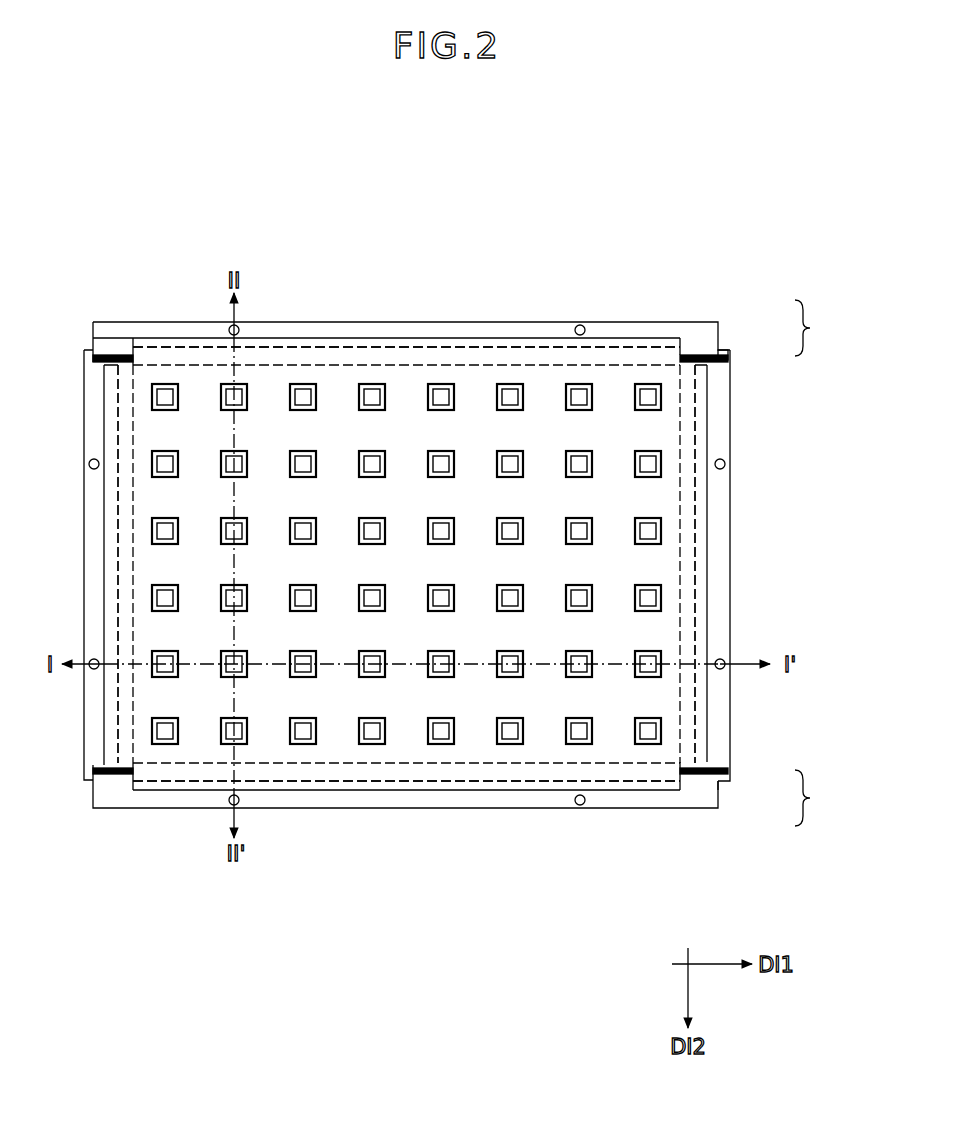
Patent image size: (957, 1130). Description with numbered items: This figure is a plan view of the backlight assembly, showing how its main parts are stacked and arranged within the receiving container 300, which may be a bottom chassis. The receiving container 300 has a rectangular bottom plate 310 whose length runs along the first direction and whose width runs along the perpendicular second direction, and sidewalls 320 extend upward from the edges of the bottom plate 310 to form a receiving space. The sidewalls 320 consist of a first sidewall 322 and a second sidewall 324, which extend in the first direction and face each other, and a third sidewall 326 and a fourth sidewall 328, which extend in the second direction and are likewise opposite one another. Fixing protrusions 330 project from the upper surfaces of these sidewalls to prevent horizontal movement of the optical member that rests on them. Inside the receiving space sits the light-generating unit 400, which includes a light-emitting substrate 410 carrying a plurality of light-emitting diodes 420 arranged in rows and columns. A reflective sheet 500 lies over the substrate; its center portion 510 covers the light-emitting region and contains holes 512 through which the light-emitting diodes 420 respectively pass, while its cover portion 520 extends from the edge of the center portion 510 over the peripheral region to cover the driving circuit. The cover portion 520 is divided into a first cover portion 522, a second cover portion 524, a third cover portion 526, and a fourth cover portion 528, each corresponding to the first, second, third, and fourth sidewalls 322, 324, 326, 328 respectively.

The receiving container 300 is at (823, 328).
The bottom plate 310 is at (728, 356).
The sidewalls 320 is at (712, 315).
The first sidewall 322 is at (103, 600).
The second sidewall 324 is at (715, 716).
The third sidewall 326 is at (160, 798).
The fourth sidewall 328 is at (118, 340).
The fixing protrusion 330 is at (89, 464).
The light-generating unit 400 is at (823, 798).
The light-emitting substrate 410 is at (728, 771).
The light-emitting diodes 420 is at (648, 736).
The reflective sheet 500 is at (406, 501).
The center portion 510 is at (510, 262).
The holes 512 is at (593, 731).
The cover portion 520 is at (525, 335).
The first cover portion 522 is at (125, 400).
The second cover portion 524 is at (690, 412).
The third cover portion 526 is at (372, 773).
The fourth cover portion 528 is at (300, 353).